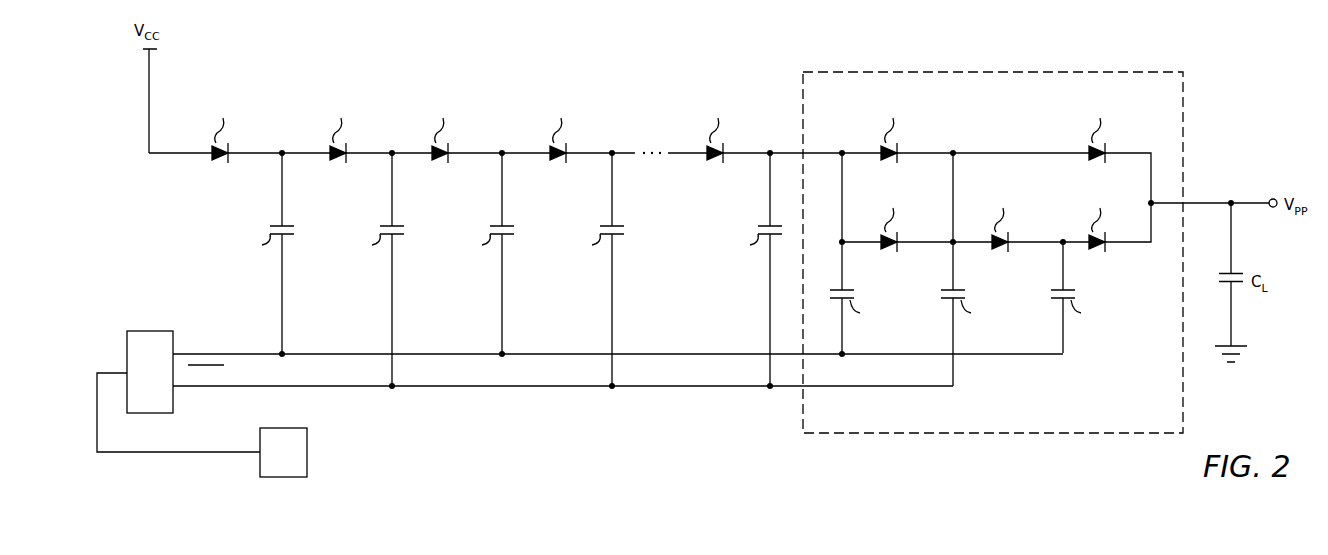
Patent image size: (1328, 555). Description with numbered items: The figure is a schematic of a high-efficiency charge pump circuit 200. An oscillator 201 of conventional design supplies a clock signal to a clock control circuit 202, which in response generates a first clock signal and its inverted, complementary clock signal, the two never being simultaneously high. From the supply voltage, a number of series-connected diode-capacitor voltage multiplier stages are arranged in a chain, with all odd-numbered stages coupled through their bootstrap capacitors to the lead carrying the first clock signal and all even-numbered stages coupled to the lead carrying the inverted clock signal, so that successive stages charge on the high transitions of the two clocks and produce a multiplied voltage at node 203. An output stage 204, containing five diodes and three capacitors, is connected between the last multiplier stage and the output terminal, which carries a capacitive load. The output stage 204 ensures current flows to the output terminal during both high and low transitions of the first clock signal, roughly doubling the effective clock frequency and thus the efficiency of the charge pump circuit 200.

The charge pump circuit 200 is at (490, 80).
The oscillator 201 is at (307, 460).
The clock control circuit 202 is at (156, 330).
The node 203 is at (771, 150).
The output stage 204 is at (1183, 100).